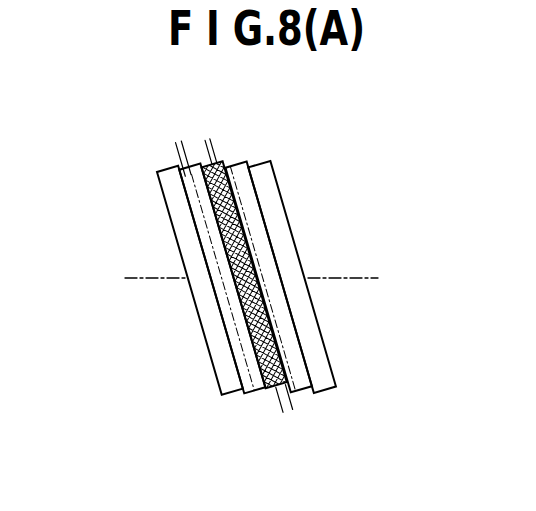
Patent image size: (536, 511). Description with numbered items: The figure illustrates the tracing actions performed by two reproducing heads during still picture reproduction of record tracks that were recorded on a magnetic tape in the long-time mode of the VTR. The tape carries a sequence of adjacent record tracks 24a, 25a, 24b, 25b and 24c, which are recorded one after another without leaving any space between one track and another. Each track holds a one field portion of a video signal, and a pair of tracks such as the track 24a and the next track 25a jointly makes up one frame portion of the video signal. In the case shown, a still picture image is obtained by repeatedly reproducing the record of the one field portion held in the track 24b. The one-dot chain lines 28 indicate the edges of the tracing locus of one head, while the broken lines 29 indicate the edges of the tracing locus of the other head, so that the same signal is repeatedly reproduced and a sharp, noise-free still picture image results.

The track 24a is at (162, 167).
The track 24b is at (290, 395).
The track 24c is at (263, 163).
The track 25a is at (258, 394).
The track 25b is at (243, 163).
The one-dot chain lines 28 is at (204, 141).
The broken lines 29 is at (213, 141).